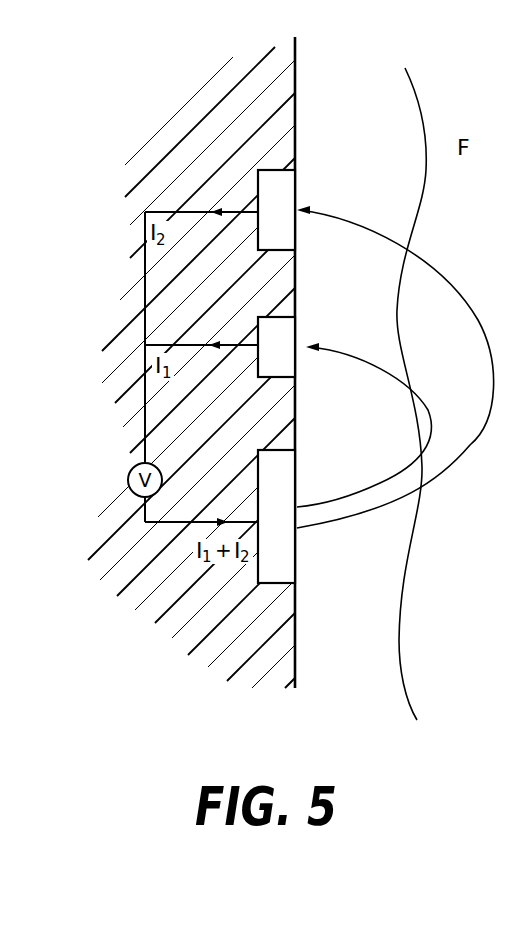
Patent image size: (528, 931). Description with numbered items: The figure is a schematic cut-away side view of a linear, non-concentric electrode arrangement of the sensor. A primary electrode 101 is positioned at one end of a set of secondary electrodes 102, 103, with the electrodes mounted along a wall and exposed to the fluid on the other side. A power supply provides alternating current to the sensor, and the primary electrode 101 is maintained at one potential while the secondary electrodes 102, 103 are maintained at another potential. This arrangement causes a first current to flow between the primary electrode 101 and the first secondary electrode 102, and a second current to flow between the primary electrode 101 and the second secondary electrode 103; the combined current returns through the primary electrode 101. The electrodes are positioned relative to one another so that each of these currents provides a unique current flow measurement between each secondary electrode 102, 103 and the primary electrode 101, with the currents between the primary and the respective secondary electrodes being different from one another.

The primary electrode 101 is at (285, 485).
The secondary electrode 102 is at (285, 340).
The secondary electrode 103 is at (285, 193).